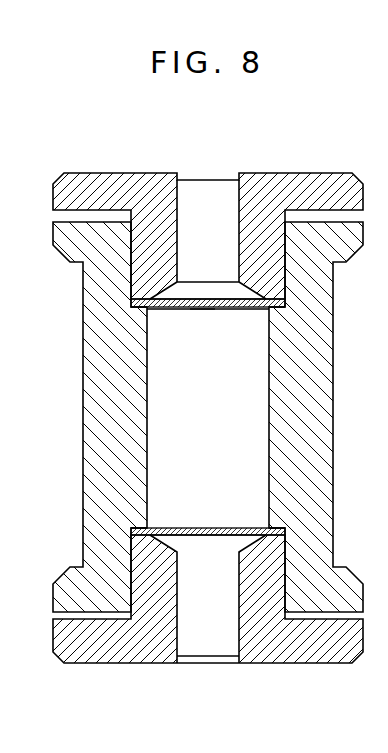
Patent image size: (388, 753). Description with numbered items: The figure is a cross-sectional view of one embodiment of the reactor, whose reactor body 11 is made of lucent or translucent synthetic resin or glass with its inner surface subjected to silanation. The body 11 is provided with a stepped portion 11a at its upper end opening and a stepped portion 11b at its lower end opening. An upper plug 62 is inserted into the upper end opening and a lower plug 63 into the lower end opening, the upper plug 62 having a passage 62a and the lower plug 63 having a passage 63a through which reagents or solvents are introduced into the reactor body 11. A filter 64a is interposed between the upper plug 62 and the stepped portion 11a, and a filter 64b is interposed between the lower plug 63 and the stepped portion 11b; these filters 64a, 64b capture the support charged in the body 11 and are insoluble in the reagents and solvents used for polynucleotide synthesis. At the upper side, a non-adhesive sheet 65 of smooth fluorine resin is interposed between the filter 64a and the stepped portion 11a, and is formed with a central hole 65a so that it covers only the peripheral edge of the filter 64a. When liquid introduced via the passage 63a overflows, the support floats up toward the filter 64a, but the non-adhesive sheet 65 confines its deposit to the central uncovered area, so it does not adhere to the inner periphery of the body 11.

The reactor body 11 is at (337, 400).
The stepped portion 11a is at (132, 312).
The stepped portion 11b is at (137, 517).
The upper plug 62 is at (258, 173).
The passage of upper plug 62a is at (193, 202).
The lower plug 63 is at (303, 663).
The passage 63a is at (202, 627).
The filter 64a is at (222, 308).
The filter 64b is at (183, 528).
The non-adhesive sheet 65 is at (157, 309).
The hole 65a is at (197, 309).